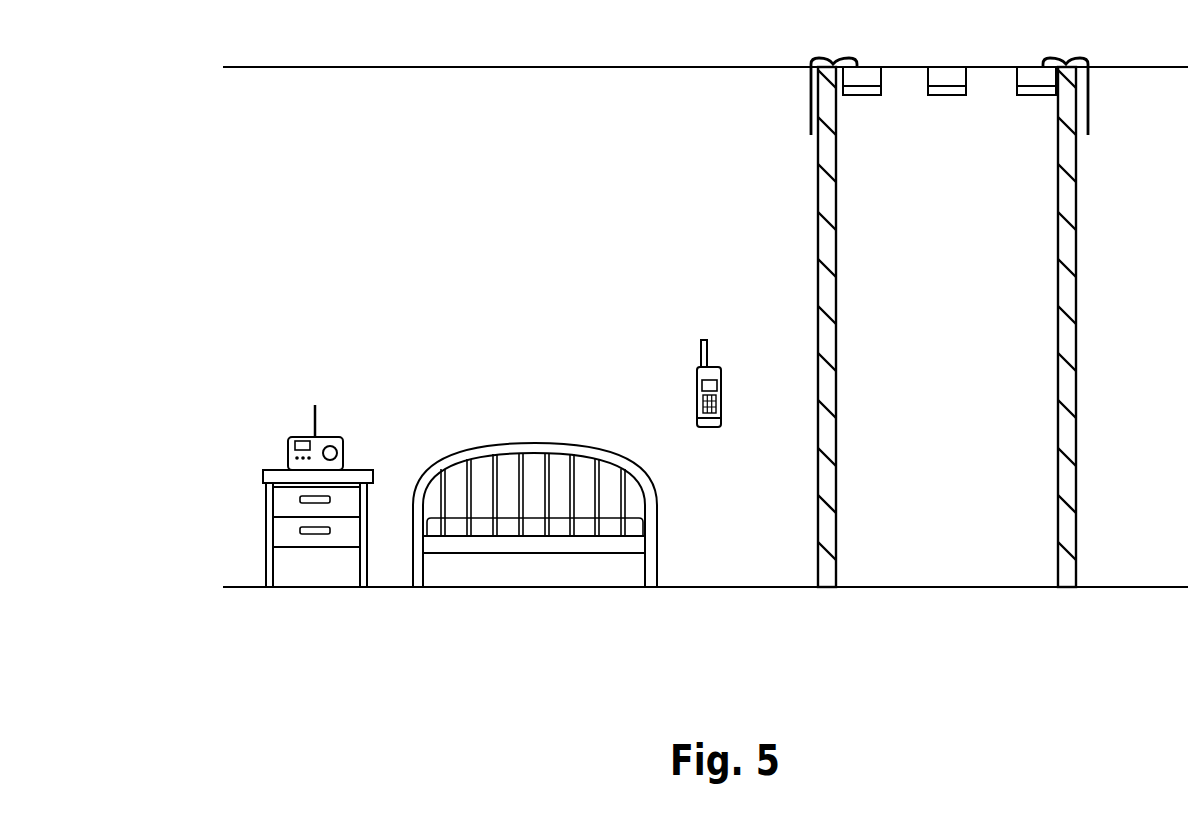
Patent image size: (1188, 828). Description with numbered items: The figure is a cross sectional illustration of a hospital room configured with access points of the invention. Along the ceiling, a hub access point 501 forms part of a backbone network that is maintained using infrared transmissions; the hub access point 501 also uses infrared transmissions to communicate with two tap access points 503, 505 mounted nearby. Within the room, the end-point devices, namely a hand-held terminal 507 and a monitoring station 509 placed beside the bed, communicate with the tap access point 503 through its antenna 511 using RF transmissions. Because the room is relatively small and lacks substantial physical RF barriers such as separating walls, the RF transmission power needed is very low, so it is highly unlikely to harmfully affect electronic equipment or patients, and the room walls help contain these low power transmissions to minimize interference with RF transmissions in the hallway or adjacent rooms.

The hub access point 501 is at (940, 74).
The tap access point 503 is at (862, 74).
The tap access point 505 is at (1027, 74).
The hand-held terminal 507 is at (710, 367).
The monitoring station 509 is at (322, 437).
The antenna 511 is at (810, 87).